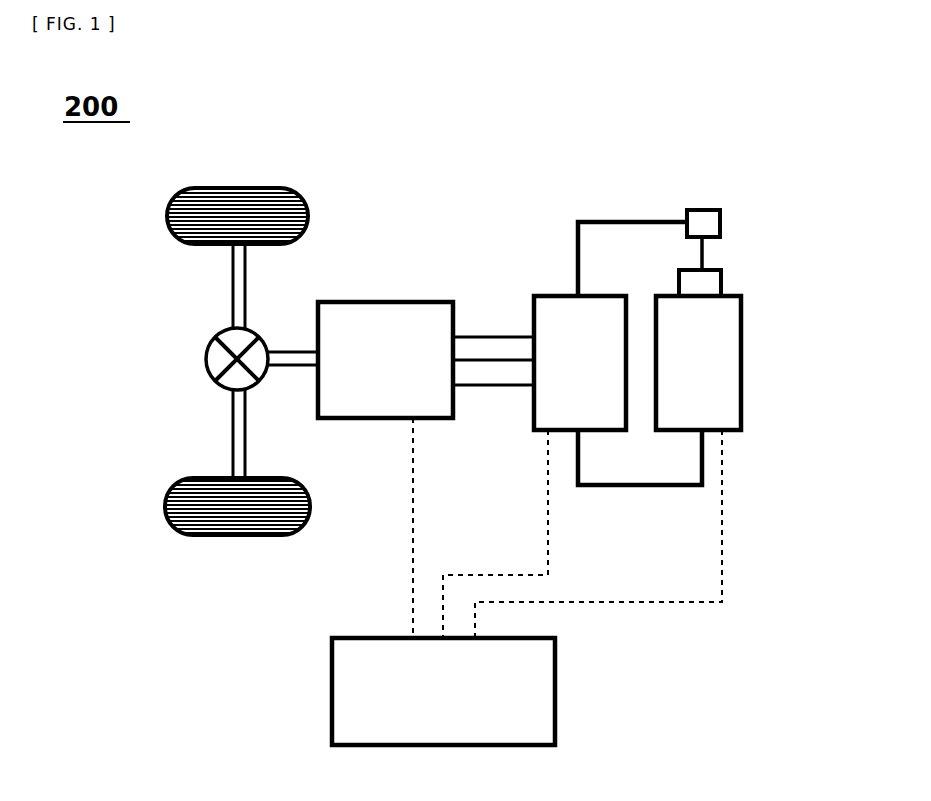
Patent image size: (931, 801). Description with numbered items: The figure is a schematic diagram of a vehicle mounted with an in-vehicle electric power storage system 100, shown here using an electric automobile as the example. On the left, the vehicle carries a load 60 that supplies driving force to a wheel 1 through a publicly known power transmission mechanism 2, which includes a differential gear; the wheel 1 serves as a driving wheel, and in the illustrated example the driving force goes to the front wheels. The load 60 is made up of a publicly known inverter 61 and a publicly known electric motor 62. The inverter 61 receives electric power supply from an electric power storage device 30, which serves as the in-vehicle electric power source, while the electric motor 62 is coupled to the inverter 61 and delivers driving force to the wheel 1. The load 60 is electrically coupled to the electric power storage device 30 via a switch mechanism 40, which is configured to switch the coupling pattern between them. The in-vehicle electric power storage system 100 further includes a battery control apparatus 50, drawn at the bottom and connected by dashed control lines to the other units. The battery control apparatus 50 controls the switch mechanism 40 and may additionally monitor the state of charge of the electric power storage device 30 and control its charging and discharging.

The wheel 1 is at (167, 208).
The power transmission mechanism 2 is at (205, 350).
The load 60 is at (472, 274).
The electric motor 62 is at (383, 300).
The inverter 61 is at (545, 294).
The switch mechanism 40 is at (705, 209).
The electric power storage device 30 is at (748, 321).
The battery control apparatus 50 is at (330, 686).
The in-vehicle electric power storage system 100 is at (665, 642).